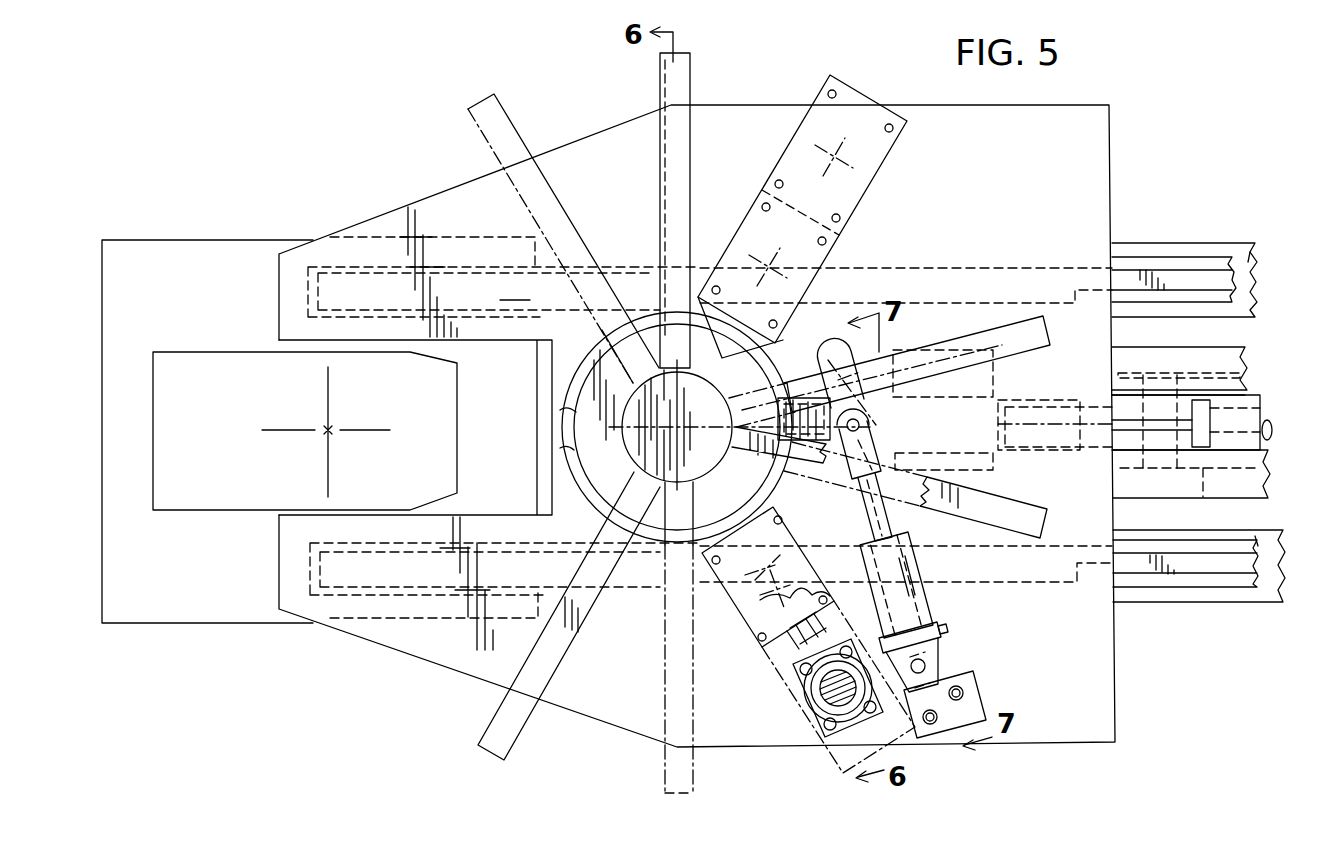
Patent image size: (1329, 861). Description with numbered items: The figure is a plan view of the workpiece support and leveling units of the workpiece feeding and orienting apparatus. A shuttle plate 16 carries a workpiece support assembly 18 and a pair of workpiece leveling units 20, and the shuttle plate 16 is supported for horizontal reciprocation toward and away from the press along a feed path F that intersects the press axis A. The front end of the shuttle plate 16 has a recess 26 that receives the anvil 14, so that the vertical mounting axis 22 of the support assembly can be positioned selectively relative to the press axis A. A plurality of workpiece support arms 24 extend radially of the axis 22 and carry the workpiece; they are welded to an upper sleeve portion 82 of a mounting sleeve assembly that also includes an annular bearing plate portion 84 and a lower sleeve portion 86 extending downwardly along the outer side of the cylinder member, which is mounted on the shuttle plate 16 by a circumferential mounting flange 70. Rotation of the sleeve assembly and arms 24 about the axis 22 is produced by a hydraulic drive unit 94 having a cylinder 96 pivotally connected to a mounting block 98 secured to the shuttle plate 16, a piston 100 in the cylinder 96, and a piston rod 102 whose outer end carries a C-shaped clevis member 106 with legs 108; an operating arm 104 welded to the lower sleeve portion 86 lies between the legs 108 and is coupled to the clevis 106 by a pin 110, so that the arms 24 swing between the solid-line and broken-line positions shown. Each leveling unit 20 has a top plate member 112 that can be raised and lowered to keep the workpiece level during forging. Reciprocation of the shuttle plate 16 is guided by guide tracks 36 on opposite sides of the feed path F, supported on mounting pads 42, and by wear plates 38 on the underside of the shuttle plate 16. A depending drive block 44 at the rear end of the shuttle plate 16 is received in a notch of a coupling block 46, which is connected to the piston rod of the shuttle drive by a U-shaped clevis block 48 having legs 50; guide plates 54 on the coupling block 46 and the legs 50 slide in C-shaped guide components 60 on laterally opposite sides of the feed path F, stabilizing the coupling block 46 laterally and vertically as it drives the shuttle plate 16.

The anvil 14 is at (203, 352).
The shuttle plate 16 is at (1114, 130).
The workpiece support assembly 18 is at (637, 266).
The workpiece leveling units 20 is at (819, 424).
The vertical mounting axis 22 is at (679, 428).
The workpiece support arms 24 is at (690, 94).
The recess 26 is at (545, 516).
The guide tracks 36 is at (1188, 268).
The wear plates 38 is at (1000, 268).
The mounting pads 42 is at (1248, 243).
The drive block 44 is at (1080, 398).
The coupling block 46 is at (1137, 395).
The clevis block 48 is at (1260, 391).
The legs 50 is at (1202, 378).
The guide plates 54 is at (992, 385).
The C-shaped guide components 60 is at (1250, 350).
The circumferential mounting flange 70 is at (564, 465).
The upper sleeve portion 82 is at (627, 462).
The bearing plate portion 84 is at (580, 427).
The lower sleeve portion 86 is at (567, 385).
The hydraulic drive unit 94 is at (940, 600).
The cylinder 96 is at (912, 574).
The mounting block 98 is at (968, 688).
The piston 100 is at (950, 630).
The piston rod 102 is at (858, 492).
The operating arm 104 is at (779, 410).
The clevis member 106 is at (884, 456).
The legs 108 is at (870, 426).
The pin 110 is at (808, 468).
The top plate member 112 is at (762, 200).
The press axis A is at (333, 428).
The feed path F is at (1070, 428).